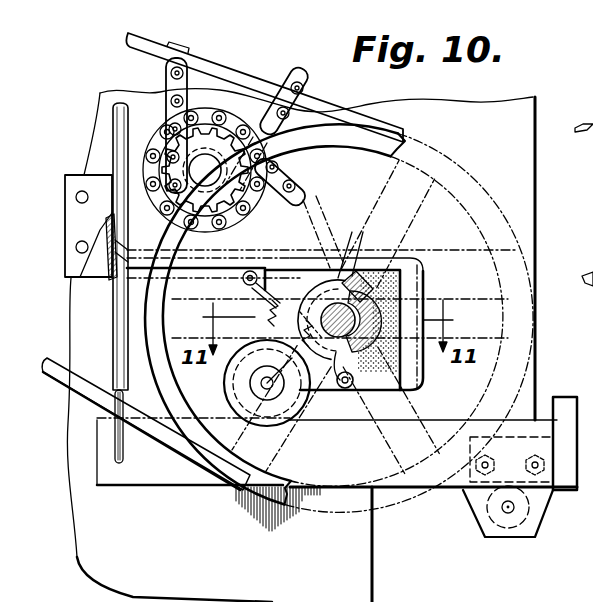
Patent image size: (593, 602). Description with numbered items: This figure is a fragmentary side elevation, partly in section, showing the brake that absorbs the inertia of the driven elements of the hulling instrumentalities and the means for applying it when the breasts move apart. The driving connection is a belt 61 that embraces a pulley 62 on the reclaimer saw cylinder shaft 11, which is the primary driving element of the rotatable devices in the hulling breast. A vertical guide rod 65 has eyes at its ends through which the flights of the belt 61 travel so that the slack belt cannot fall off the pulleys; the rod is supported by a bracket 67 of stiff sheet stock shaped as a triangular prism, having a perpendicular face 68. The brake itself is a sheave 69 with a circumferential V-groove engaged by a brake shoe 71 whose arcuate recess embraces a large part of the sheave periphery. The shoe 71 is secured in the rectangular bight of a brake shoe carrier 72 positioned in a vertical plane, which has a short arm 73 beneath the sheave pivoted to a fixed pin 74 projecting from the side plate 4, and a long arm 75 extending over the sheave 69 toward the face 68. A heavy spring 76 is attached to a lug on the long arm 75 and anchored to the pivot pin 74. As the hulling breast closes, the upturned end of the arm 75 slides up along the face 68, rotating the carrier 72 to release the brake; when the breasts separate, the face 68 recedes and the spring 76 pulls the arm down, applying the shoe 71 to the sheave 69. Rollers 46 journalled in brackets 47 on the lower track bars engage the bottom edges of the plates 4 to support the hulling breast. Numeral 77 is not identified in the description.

The plates 4 is at (518, 112).
The reclaimer saw cylinder shaft 11 is at (353, 245).
The rollers 46 is at (540, 503).
The brackets 47 is at (535, 528).
The belt 61 is at (236, 78).
The pulley 62 is at (523, 392).
The vertical guide rod 65 is at (113, 343).
The bracket 67 is at (92, 180).
The perpendicular face 68 is at (107, 281).
The sheave 69 is at (378, 272).
The brake shoe 71 is at (400, 284).
The brake shoe carrier 72 is at (405, 260).
The short arm 73 is at (398, 389).
The fixed pin 74 is at (346, 389).
The long arm 75 is at (258, 262).
The heavy spring 76 is at (263, 302).
The chain 77 is at (166, 214).